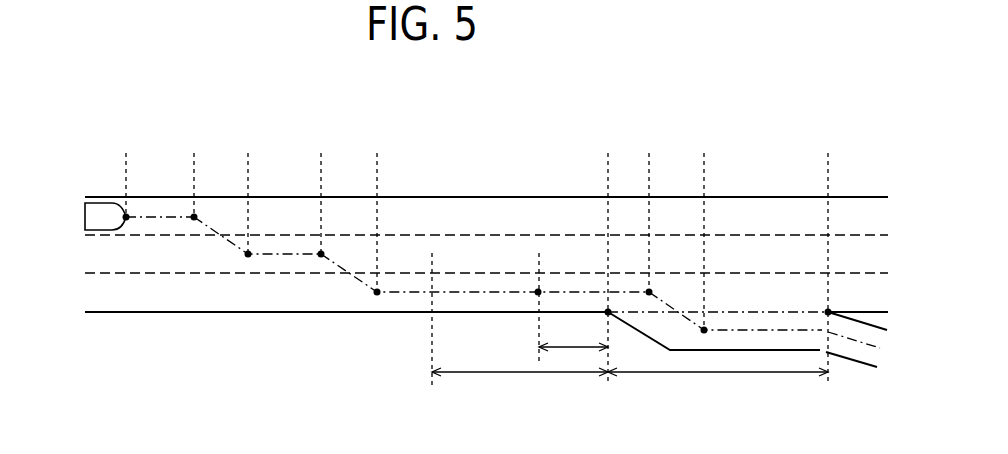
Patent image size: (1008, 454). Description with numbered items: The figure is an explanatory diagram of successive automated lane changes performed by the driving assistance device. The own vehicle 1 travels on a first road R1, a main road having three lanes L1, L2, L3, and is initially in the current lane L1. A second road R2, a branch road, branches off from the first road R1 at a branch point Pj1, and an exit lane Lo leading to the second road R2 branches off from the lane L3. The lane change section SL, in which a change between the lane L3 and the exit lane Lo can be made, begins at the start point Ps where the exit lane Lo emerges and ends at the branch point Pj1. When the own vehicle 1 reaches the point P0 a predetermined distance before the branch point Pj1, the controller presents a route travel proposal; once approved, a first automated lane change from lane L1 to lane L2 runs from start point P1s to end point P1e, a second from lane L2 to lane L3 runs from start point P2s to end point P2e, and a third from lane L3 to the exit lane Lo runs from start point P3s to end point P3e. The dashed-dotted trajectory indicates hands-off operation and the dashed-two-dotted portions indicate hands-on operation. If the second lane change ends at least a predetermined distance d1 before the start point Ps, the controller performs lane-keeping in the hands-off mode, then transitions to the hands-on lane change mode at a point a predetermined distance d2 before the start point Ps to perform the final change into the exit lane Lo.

The own vehicle 1 is at (84, 214).
The first road R1 is at (113, 312).
The second road R2 is at (852, 360).
The lane L1 is at (153, 227).
The lane L2 is at (196, 253).
The lane L3 is at (240, 292).
The exit lane Lo is at (677, 330).
The predetermined distance d1 is at (520, 386).
The predetermined distance d2 is at (573, 334).
The lane change section SL is at (718, 386).
The point P0 is at (126, 142).
The start point P1s is at (194, 142).
The end point P1e is at (248, 142).
The start point P2s is at (320, 142).
The end point P2e is at (377, 142).
The start point Ps is at (608, 142).
The start point P3s is at (648, 142).
The end point P3e is at (704, 142).
The branch point Pj1 is at (827, 142).